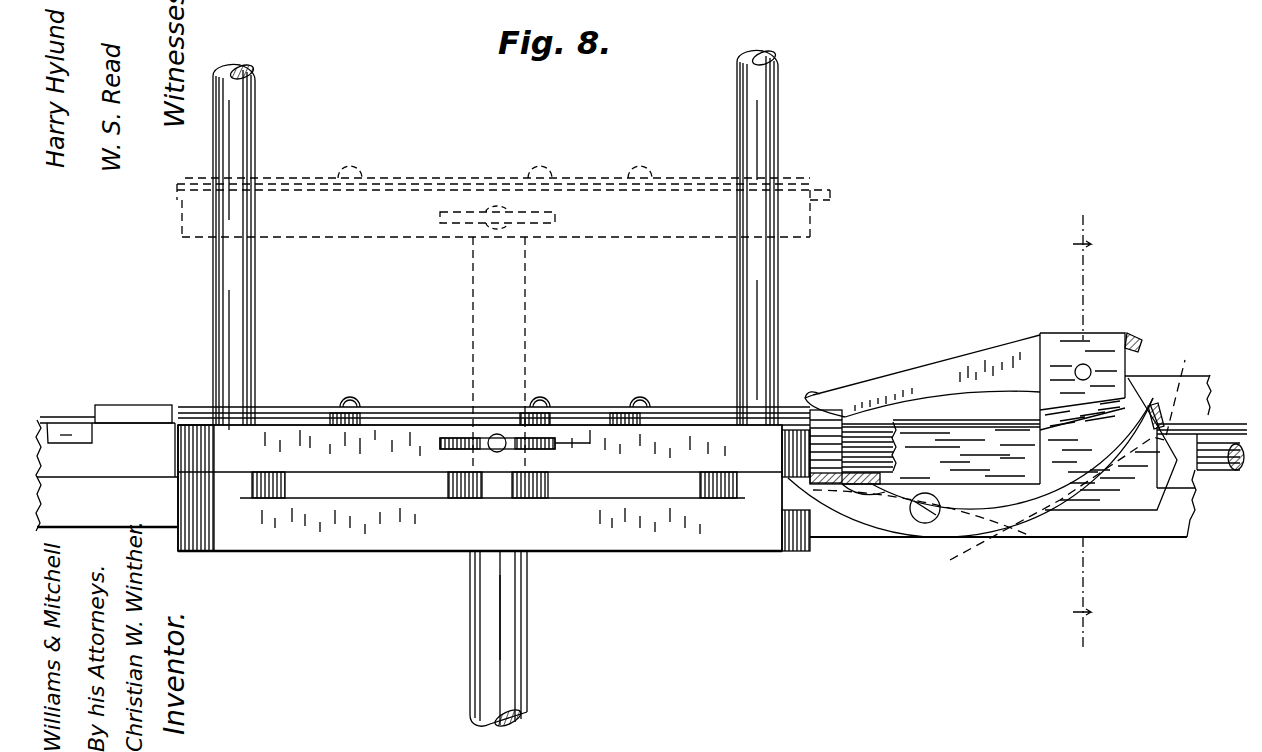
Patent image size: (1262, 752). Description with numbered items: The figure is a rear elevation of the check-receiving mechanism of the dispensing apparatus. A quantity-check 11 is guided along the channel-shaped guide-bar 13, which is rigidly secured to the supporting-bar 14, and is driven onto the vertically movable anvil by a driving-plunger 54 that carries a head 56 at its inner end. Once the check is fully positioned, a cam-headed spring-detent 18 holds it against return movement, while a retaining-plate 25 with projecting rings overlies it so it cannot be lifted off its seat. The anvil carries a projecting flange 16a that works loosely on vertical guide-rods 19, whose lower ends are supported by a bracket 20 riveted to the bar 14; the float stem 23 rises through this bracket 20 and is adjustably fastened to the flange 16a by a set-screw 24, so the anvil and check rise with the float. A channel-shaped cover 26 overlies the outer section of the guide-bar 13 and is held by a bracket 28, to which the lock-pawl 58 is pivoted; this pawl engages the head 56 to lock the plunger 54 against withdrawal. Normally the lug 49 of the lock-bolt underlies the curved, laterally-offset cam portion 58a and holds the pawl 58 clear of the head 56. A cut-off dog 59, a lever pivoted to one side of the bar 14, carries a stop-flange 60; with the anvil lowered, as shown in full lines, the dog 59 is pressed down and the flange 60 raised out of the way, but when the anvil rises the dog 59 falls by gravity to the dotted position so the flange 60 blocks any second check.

The quantity-check 11 is at (58, 418).
The guide-bar 13 is at (141, 464).
The supporting-bar 14 is at (163, 520).
The projecting flange 16a is at (722, 385).
The spring-detent 18 is at (828, 192).
The guide-rods 19 is at (242, 322).
The bracket 20 is at (696, 540).
The stem 23 is at (528, 377).
The set-screw 24 is at (540, 245).
The retaining-plate 25 is at (458, 178).
The channel-shaped cover 26 is at (1192, 420).
The bracket 28 is at (1108, 336).
The lug 49 is at (122, 410).
The driving-plunger 54 is at (862, 444).
The head 56 is at (824, 426).
The lock-pawl 58 is at (940, 382).
The cam portion 58a is at (846, 355).
The cut-off dog 59 is at (966, 535).
The stop-flange 60 is at (1160, 418).